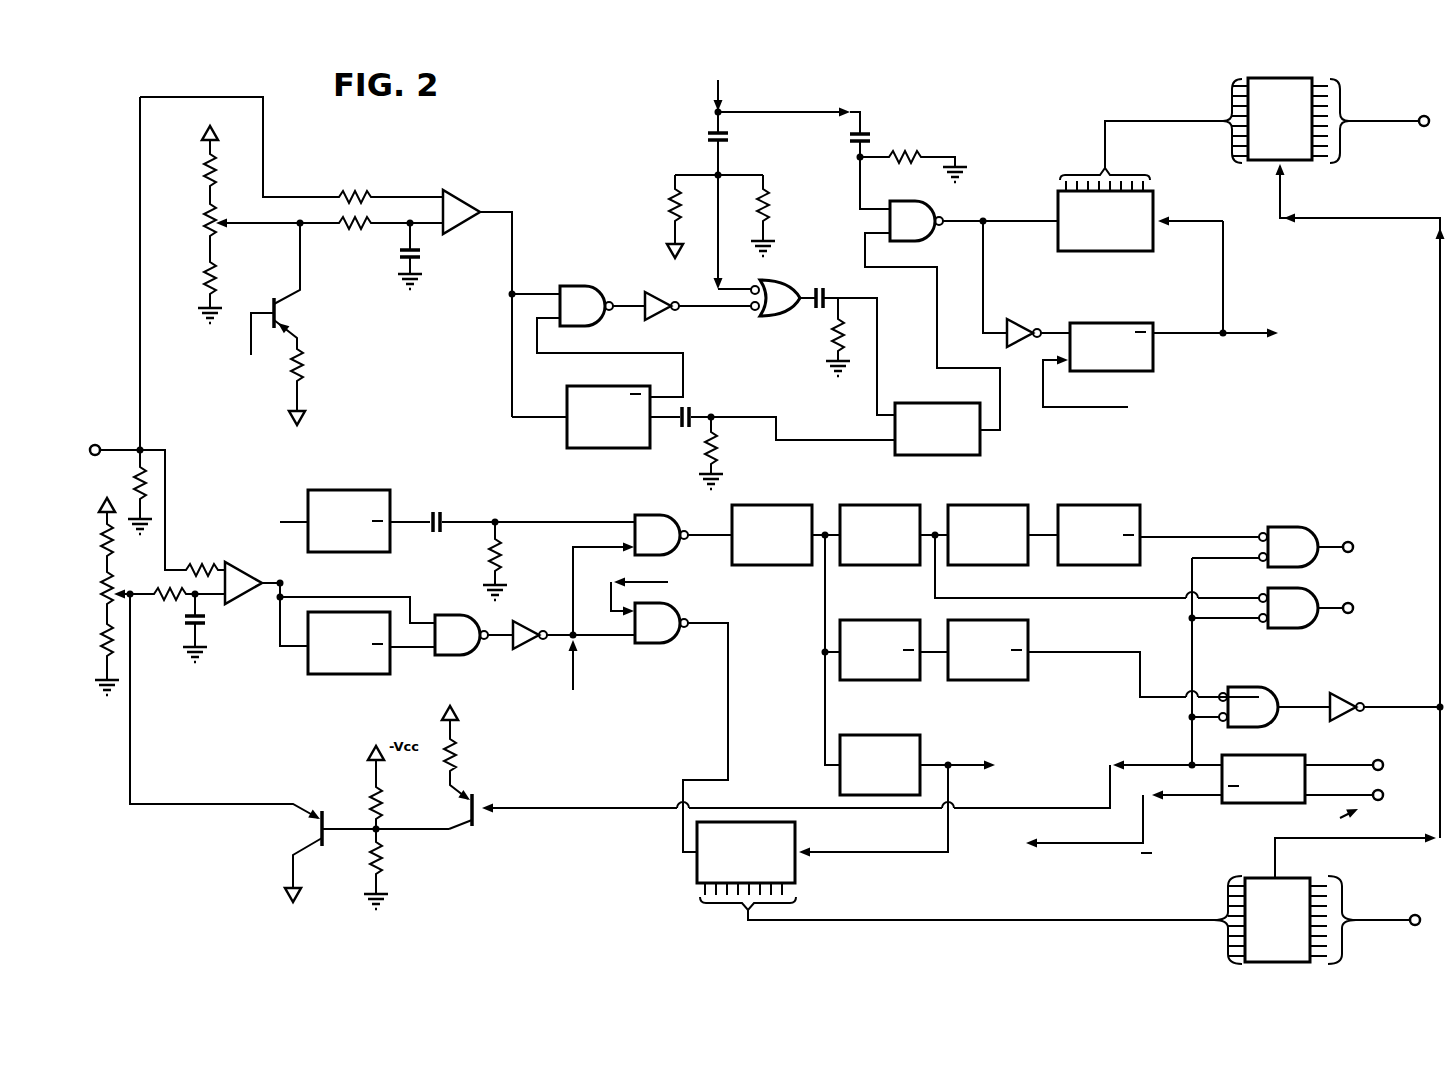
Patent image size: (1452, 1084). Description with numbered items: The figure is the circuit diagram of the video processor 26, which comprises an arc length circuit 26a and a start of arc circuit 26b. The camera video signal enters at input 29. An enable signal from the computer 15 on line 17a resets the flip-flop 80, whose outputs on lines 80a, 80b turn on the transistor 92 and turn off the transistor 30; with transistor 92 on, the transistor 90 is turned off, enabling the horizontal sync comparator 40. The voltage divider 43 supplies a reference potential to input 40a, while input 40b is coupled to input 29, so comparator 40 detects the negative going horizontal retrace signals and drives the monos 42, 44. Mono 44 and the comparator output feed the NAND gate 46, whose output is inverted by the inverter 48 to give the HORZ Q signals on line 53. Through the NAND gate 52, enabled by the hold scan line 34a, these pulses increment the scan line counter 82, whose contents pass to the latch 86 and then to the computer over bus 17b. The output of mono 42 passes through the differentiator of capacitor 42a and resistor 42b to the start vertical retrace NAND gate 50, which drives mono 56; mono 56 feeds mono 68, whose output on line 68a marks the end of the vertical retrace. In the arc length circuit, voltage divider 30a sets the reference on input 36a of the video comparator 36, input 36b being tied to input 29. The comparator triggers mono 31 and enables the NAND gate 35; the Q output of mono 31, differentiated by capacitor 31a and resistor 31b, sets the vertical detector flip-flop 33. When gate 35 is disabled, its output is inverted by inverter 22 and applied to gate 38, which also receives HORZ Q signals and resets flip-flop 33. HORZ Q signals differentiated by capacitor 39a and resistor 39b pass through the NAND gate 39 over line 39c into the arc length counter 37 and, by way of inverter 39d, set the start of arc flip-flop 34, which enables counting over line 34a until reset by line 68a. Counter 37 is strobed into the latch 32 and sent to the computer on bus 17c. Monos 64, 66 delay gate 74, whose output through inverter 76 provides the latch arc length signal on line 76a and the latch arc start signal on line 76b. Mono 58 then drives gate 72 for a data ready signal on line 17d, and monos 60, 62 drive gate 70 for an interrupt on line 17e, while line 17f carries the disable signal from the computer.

The computer 15 is at (1334, 827).
The enable line 17a is at (1358, 797).
The multibit digital bus 17b is at (1362, 920).
The multibit bus 17c is at (1372, 123).
The data ready line 17d is at (1335, 610).
The interrupt line 17e is at (1337, 543).
The disable line 17f is at (1333, 763).
The inverter 22 is at (660, 319).
The video processor 26 is at (904, 82).
The arc length circuit 26a is at (484, 452).
The start of arc circuit 26b is at (593, 961).
The input terminal 29 is at (90, 443).
The transistor 30 is at (290, 312).
The voltage divider 30a is at (194, 236).
The monostable multivibrator 31 is at (602, 385).
The capacitor 31a is at (695, 408).
The resistor 31b is at (718, 451).
The latch 32 is at (1308, 81).
The vertical detector flip-flop 33 is at (985, 451).
The start of arc flip-flop 34 is at (1157, 351).
The hold scan line 34a is at (1250, 338).
The NAND gate 35 is at (592, 286).
The video comparator 36 is at (470, 223).
The comparator input 36a is at (437, 237).
The comparator input 36b is at (434, 193).
The arc length counter 37 is at (1154, 201).
The gate 38 is at (791, 284).
The NAND gate 39 is at (916, 197).
The capacitor 39a is at (848, 142).
The resistor 39b is at (906, 157).
The output line 39c is at (1038, 221).
The inverter 39d is at (1017, 326).
The horizontal sync comparator 40 is at (248, 556).
The comparator input 40a is at (217, 608).
The comparator input 40b is at (222, 561).
The monostable multivibrator 42 is at (336, 489).
The capacitor 42a is at (434, 517).
The resistor 42b is at (497, 556).
The voltage divider 43 is at (93, 603).
The monostable multivibrator 44 is at (368, 674).
The NAND gate 46 is at (455, 655).
The inverter 48 is at (533, 627).
The start vertical retrace NAND gate 50 is at (685, 524).
The NAND gate 52 is at (653, 643).
The HORZ Q line 53 is at (769, 77).
The monostable multivibrator 56 is at (780, 505).
The monostable multivibrator 58 is at (883, 505).
The monostable multivibrator 60 is at (1000, 503).
The monostable multivibrator 62 is at (1142, 513).
The monostable multivibrator 64 is at (865, 620).
The monostable multivibrator 66 is at (1033, 631).
The monostable multivibrator 68 is at (892, 735).
The end of vertical retrace line 68a is at (1052, 410).
The interrupt gate 70 is at (1285, 527).
The data ready gate 72 is at (1272, 588).
The gate 74 is at (1260, 686).
The inverter 76 is at (1346, 696).
The latch arc length line 76a is at (1276, 191).
The latch arc start line 76b is at (1440, 740).
The flip-flop 80 is at (1274, 756).
The flip-flop output line 80a is at (1140, 766).
The flip-flop output line 80b is at (246, 401).
The scan line counter 82 is at (802, 838).
The latch 86 is at (1260, 876).
The transistor 90 is at (332, 813).
The transistor 92 is at (478, 799).